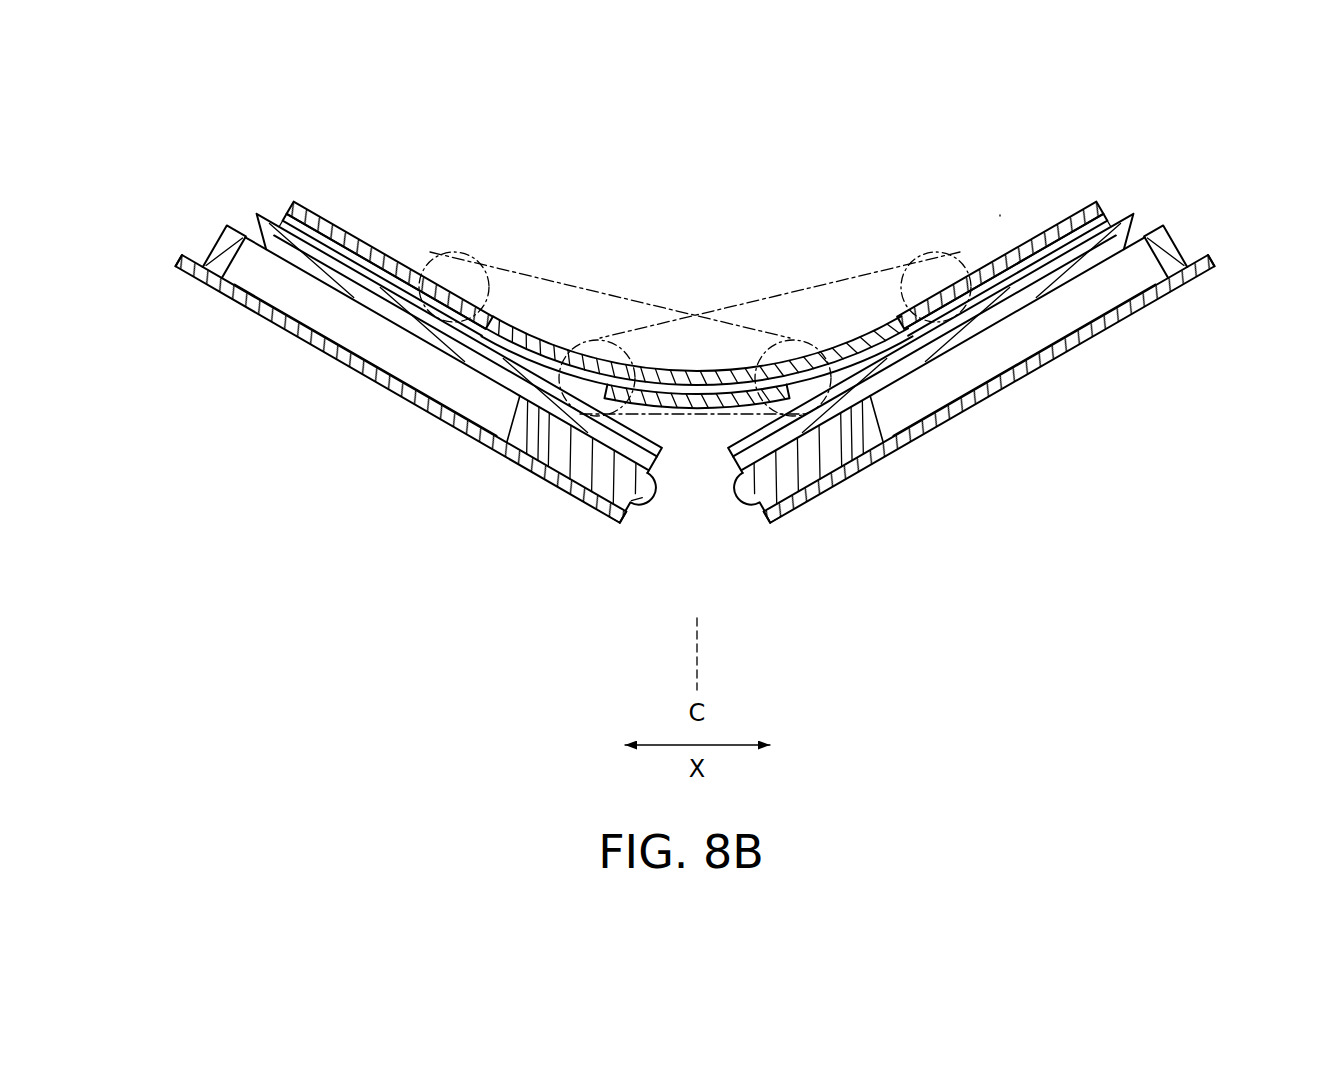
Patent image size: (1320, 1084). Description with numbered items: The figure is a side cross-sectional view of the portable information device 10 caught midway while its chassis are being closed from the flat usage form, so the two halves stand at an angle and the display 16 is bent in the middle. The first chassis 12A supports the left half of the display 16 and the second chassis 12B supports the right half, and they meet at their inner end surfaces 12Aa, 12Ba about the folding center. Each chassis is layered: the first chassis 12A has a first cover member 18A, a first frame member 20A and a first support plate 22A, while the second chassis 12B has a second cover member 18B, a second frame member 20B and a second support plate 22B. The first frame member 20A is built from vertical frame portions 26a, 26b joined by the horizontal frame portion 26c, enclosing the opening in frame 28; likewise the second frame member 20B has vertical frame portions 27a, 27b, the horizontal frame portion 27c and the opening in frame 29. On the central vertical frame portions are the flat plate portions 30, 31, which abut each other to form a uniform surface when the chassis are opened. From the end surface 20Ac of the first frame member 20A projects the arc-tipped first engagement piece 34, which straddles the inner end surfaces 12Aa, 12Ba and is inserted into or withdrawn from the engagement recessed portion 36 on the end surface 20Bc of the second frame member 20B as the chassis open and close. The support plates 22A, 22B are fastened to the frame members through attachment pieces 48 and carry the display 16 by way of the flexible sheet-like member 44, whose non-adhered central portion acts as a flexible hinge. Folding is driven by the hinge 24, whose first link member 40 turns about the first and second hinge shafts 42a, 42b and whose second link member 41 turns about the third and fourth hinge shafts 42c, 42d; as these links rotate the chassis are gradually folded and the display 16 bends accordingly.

The portable information device 10 is at (142, 157).
The first chassis 12A is at (412, 508).
The second chassis 12B is at (938, 532).
The inner end surface 12Aa is at (633, 518).
The inner end surface 12Ba is at (757, 516).
The display 16 is at (1090, 212).
The first cover member 18A is at (275, 326).
The second cover member 18B is at (1145, 313).
The first frame member 20A is at (465, 400).
The second frame member 20B is at (1018, 318).
The end surface 20Ac is at (650, 480).
The end surface 20Bc is at (770, 490).
The first support plate 22A is at (430, 343).
The second support plate 22B is at (1052, 323).
The hinge 24 is at (975, 238).
The vertical frame portion 26a is at (587, 473).
The vertical frame portion 26b is at (220, 248).
The horizontal frame portion 26c is at (365, 365).
The vertical frame portion 27a is at (840, 455).
The vertical frame portion 27b is at (1172, 250).
The horizontal frame portion 27c is at (990, 370).
The opening in frame 28 is at (365, 350).
The opening in frame 29 is at (1082, 305).
The flat plate portion 30 is at (535, 407).
The flat plate portion 31 is at (880, 400).
The first engagement piece 34 is at (656, 494).
The engagement recessed portion 36 is at (757, 490).
The first link member 40 is at (512, 262).
The second link member 41 is at (868, 262).
The first hinge shaft 42a is at (460, 286).
The second hinge shaft 42b is at (775, 350).
The third hinge shaft 42c is at (615, 350).
The fourth hinge shaft 42d is at (936, 286).
The sheet-like member 44 is at (1113, 210).
The attachment piece 48 is at (262, 228).